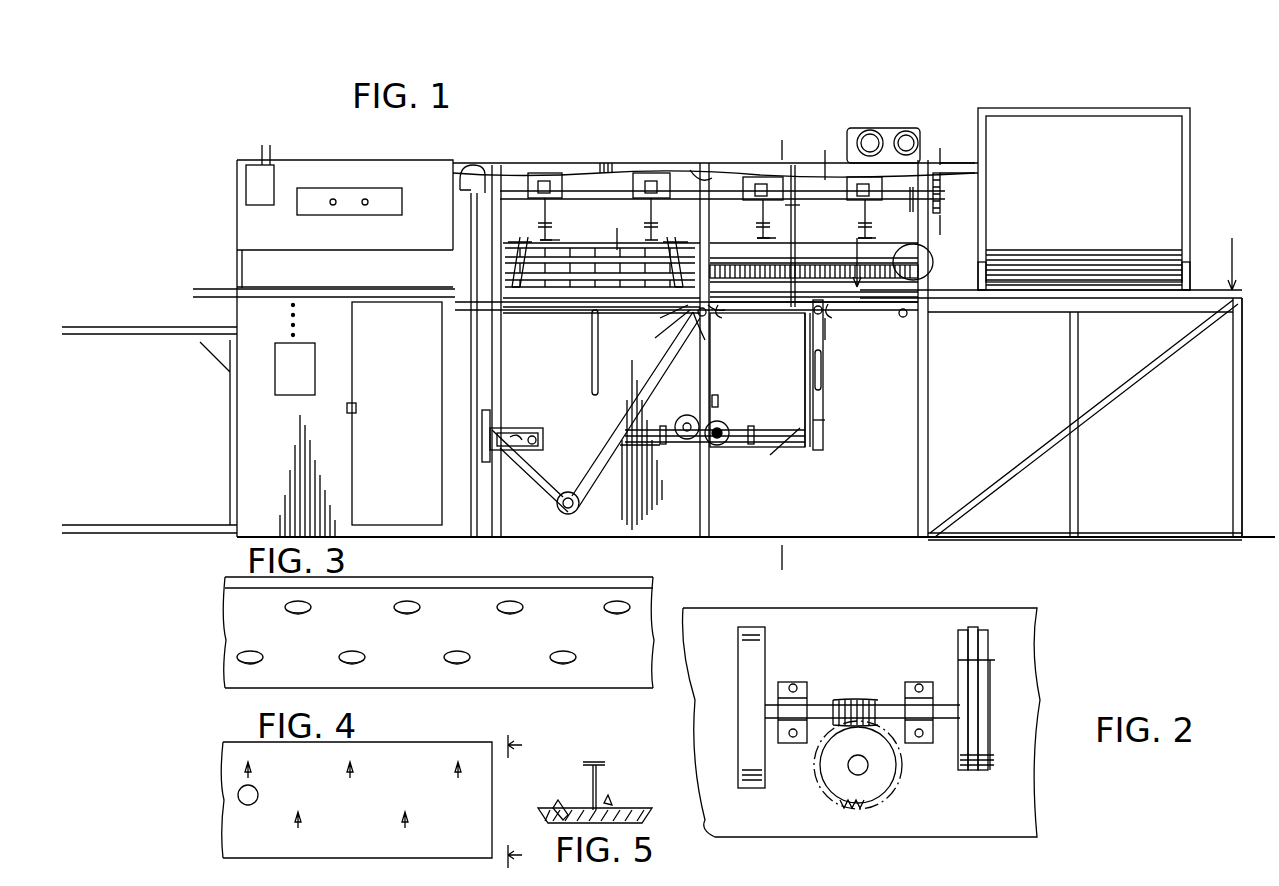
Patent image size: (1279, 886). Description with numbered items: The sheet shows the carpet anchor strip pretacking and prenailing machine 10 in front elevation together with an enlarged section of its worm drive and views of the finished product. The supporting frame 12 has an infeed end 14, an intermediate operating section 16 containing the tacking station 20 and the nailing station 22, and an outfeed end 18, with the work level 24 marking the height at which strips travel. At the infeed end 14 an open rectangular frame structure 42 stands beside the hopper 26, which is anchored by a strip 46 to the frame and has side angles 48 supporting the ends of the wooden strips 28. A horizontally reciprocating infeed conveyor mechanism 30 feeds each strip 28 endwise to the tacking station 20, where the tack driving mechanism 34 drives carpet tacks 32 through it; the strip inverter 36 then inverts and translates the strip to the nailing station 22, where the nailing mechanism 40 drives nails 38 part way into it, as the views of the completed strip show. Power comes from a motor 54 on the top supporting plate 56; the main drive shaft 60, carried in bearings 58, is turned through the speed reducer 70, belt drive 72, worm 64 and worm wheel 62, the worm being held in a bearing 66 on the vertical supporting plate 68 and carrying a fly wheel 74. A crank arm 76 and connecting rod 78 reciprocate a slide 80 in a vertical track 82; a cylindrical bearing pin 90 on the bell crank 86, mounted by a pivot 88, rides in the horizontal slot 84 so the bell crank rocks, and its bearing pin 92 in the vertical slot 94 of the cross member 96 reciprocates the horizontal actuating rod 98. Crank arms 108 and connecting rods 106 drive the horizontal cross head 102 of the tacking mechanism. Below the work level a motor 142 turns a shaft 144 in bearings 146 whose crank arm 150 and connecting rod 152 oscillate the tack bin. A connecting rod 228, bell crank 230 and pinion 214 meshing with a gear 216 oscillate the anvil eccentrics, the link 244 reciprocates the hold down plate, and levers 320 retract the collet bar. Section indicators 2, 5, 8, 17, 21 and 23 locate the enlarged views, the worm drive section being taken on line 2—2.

In FIG. 1, the section line 2— 2 is at (950, 156).
In FIG. 4, the section line 5— 5 is at (518, 798).
In FIG. 1, the section line 8— 8 is at (773, 154).
In FIG. 1, the carpet anchor strip pretacking and prenailing machine 10 is at (884, 70).
In FIG. 1, the supporting frame 12 is at (937, 378).
In FIG. 1, the infeed end 14 is at (1178, 322).
In FIG. 1, the intermediate operating section 16 is at (855, 555).
In FIG. 1, the view indicator 17 is at (1042, 253).
In FIG. 1, the outfeed end 18 is at (455, 309).
In FIG. 1, the tacking station 20 is at (750, 340).
In FIG. 1, the section line 21— 21 is at (482, 235).
In FIG. 1, the nailing station 22 is at (530, 352).
In FIG. 1, the circular arrow 23— 23 is at (915, 244).
In FIG. 1, the work level 24 is at (633, 241).
In FIG. 1, the hopper 26 is at (1202, 136).
In FIG. 1, the wooden strips 28 is at (1065, 265).
In FIG. 3, the wooden strips 28 is at (422, 656).
In FIG. 4, the wooden strips 28 is at (358, 838).
In FIG. 5, the wooden strips 28 is at (652, 819).
In FIG. 1, the infeed conveyor mechanism 30 is at (620, 395).
In FIG. 3, the carpet tacks 32 is at (615, 607).
In FIG. 4, the carpet tacks 32 is at (350, 770).
In FIG. 5, the carpet tacks 32 is at (562, 798).
In FIG. 1, the tack driving mechanism 34 is at (726, 240).
In FIG. 1, the strip inverter 36 is at (453, 337).
In FIG. 4, the nails 38 is at (258, 795).
In FIG. 5, the nails 38 is at (598, 782).
In FIG. 1, the nailing mechanism 40 is at (527, 232).
In FIG. 1, the open rectangular frame structure 42 is at (1251, 411).
In FIG. 1, the strip 46 is at (975, 180).
In FIG. 1, the side angles 48 is at (985, 152).
In FIG. 1, the motor 54 is at (870, 128).
In FIG. 1, the top supporting plate 56 is at (548, 165).
In FIG. 1, the bearings 58 is at (608, 175).
In FIG. 1, the main drive shaft 60 is at (901, 204).
In FIG. 2, the main drive shaft 60 is at (868, 765).
In FIG. 1, the worm wheel 62 is at (942, 205).
In FIG. 2, the worm wheel 62 is at (835, 790).
In FIG. 2, the worm 64 is at (862, 722).
In FIG. 2, the bearing 66 is at (790, 682).
In FIG. 2, the vertical supporting plate 68 is at (703, 625).
In FIG. 1, the speed reducer 70 is at (925, 135).
In FIG. 2, the belt drive 72 is at (980, 688).
In FIG. 2, the fly wheel 74 is at (740, 665).
In FIG. 1, the crank arm 76 is at (480, 165).
In FIG. 1, the connecting rod 78 is at (450, 364).
In FIG. 1, the slide 80 is at (498, 430).
In FIG. 1, the vertical track 82 is at (490, 410).
In FIG. 1, the horizontal slot 84 is at (518, 445).
In FIG. 1, the bell crank 86 is at (585, 466).
In FIG. 1, the pivot 88 is at (556, 506).
In FIG. 1, the cylindrical bearing pin 90 is at (532, 435).
In FIG. 1, the bearing pin 92 is at (692, 353).
In FIG. 1, the vertical slot 94 is at (663, 336).
In FIG. 1, the cross member 96 is at (662, 322).
In FIG. 1, the horizontal actuating rod 98 is at (580, 315).
In FIG. 1, the horizontal cross head 102 is at (814, 272).
In FIG. 1, the connecting rods 106 is at (768, 216).
In FIG. 1, the crank arms 108 is at (785, 190).
In FIG. 1, the motor 142 is at (675, 440).
In FIG. 1, the shaft 144 is at (645, 420).
In FIG. 1, the bearings 146 is at (650, 470).
In FIG. 1, the crank arm 150 is at (825, 432).
In FIG. 1, the connecting rod 152 is at (847, 375).
In FIG. 1, the pinion 214 is at (840, 330).
In FIG. 1, the gear 216 is at (725, 318).
In FIG. 1, the connecting rod 228 is at (715, 175).
In FIG. 1, the bell crank 230 is at (735, 318).
In FIG. 1, the link 244 is at (793, 213).
In FIG. 1, the levers 320 is at (520, 252).